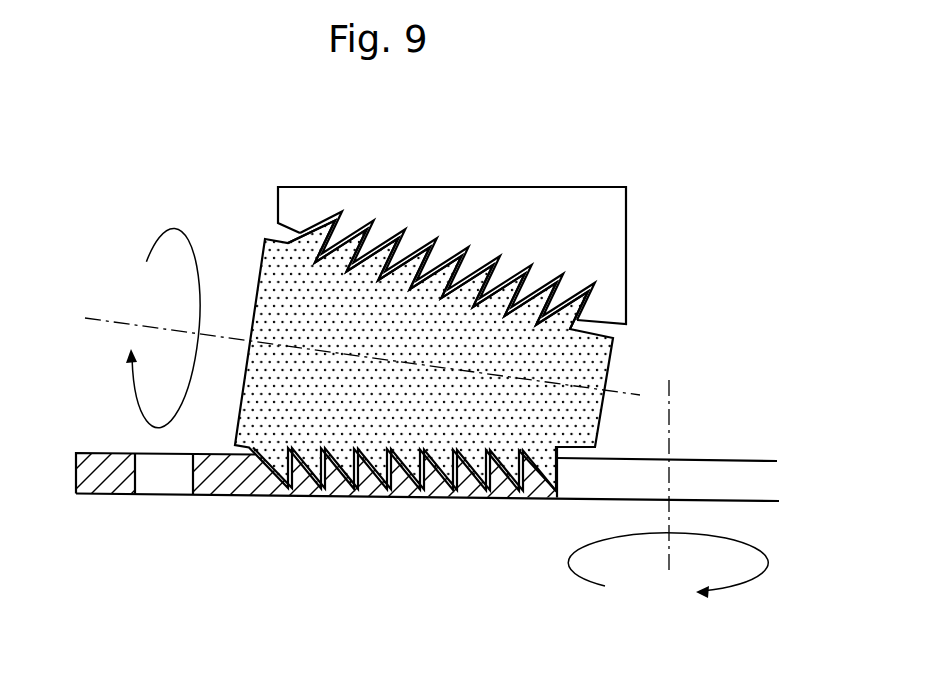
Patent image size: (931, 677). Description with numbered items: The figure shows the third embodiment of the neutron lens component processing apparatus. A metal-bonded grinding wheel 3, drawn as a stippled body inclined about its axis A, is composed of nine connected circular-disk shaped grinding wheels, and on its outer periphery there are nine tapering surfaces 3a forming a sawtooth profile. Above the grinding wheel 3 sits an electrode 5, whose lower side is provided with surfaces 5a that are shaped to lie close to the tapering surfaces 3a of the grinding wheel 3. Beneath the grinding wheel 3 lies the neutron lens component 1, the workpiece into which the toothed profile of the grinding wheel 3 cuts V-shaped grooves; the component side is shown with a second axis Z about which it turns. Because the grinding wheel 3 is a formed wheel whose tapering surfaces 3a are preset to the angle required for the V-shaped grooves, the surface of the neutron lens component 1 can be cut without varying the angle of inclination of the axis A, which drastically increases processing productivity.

The neutron lens component 1 is at (240, 486).
The metal-bonded grinding wheel 3 is at (462, 356).
The tapering surfaces 3a is at (606, 318).
The electrode 5 is at (407, 222).
The electrode surfaces 5a is at (337, 220).
The axis of the grinding wheel A is at (343, 327).
The rotation axis Z is at (668, 502).